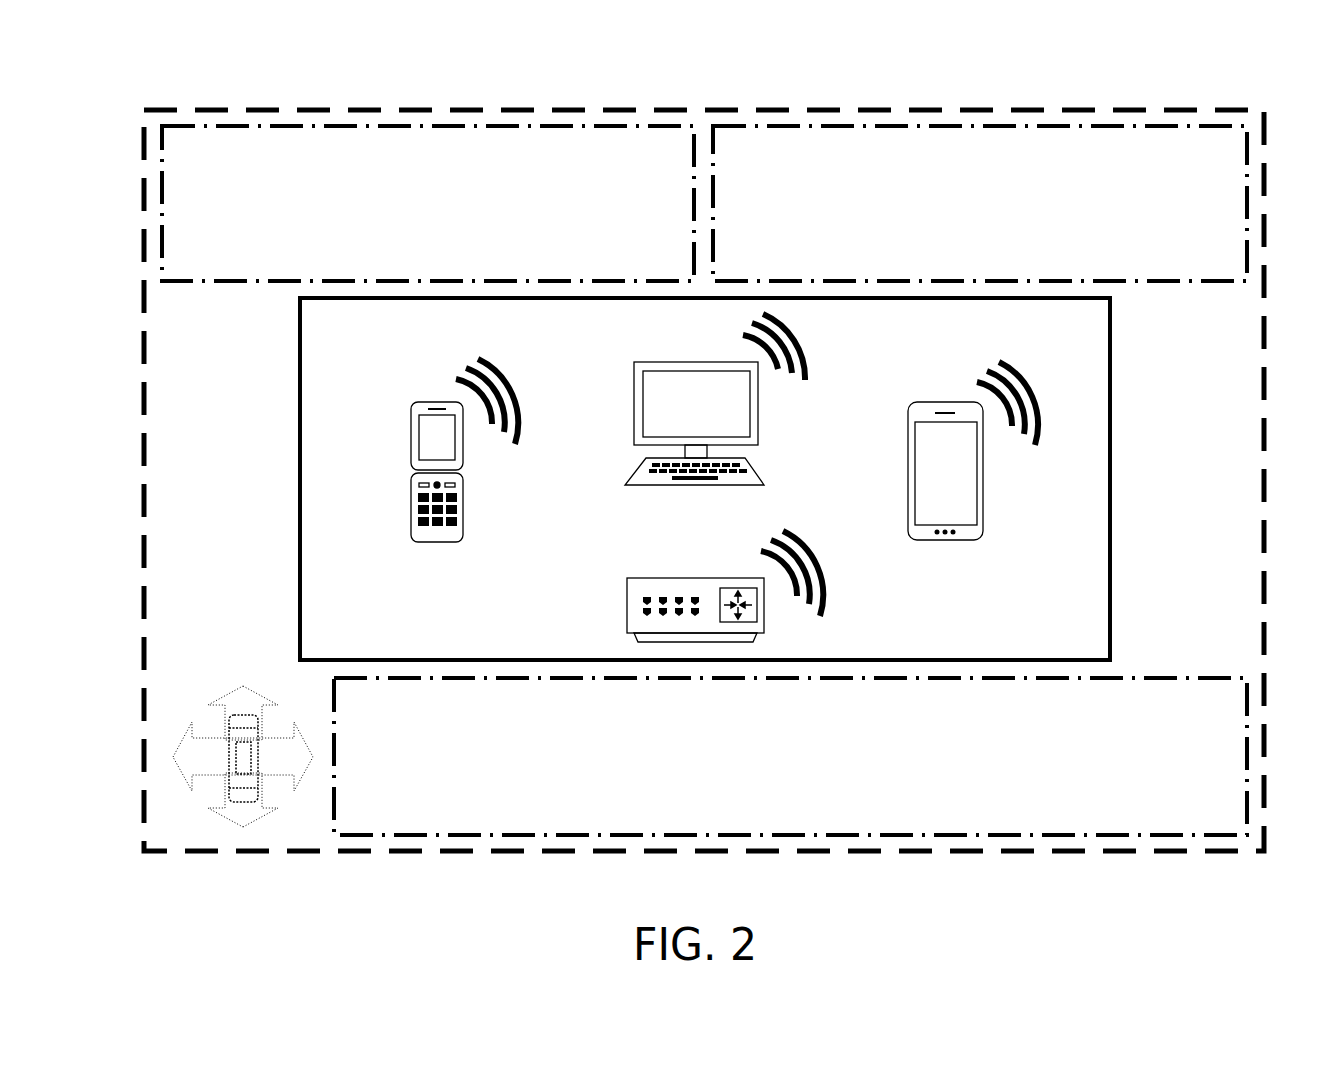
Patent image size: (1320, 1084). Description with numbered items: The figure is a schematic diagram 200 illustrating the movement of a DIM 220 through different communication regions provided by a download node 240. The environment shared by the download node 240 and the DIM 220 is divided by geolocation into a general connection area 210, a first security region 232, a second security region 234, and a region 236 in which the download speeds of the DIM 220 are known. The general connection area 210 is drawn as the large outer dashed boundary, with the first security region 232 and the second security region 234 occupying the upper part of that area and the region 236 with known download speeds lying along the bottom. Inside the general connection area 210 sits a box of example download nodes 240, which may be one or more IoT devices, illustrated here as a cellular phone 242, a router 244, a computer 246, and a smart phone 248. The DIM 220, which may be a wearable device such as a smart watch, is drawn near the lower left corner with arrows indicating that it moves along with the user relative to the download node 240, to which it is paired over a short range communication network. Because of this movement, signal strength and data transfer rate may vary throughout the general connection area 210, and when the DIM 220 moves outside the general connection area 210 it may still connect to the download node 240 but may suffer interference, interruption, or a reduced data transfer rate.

The schematic diagram 200 is at (216, 88).
The general connection area 210 is at (1130, 108).
The DIM 220 is at (247, 678).
The first security region 232 is at (448, 228).
The second security region 234 is at (999, 228).
The region with known download speeds 236 is at (810, 781).
The download node 240 is at (345, 359).
The cellular phone 242 is at (403, 470).
The router 244 is at (626, 619).
The computer 246 is at (632, 395).
The smart phone 248 is at (908, 480).